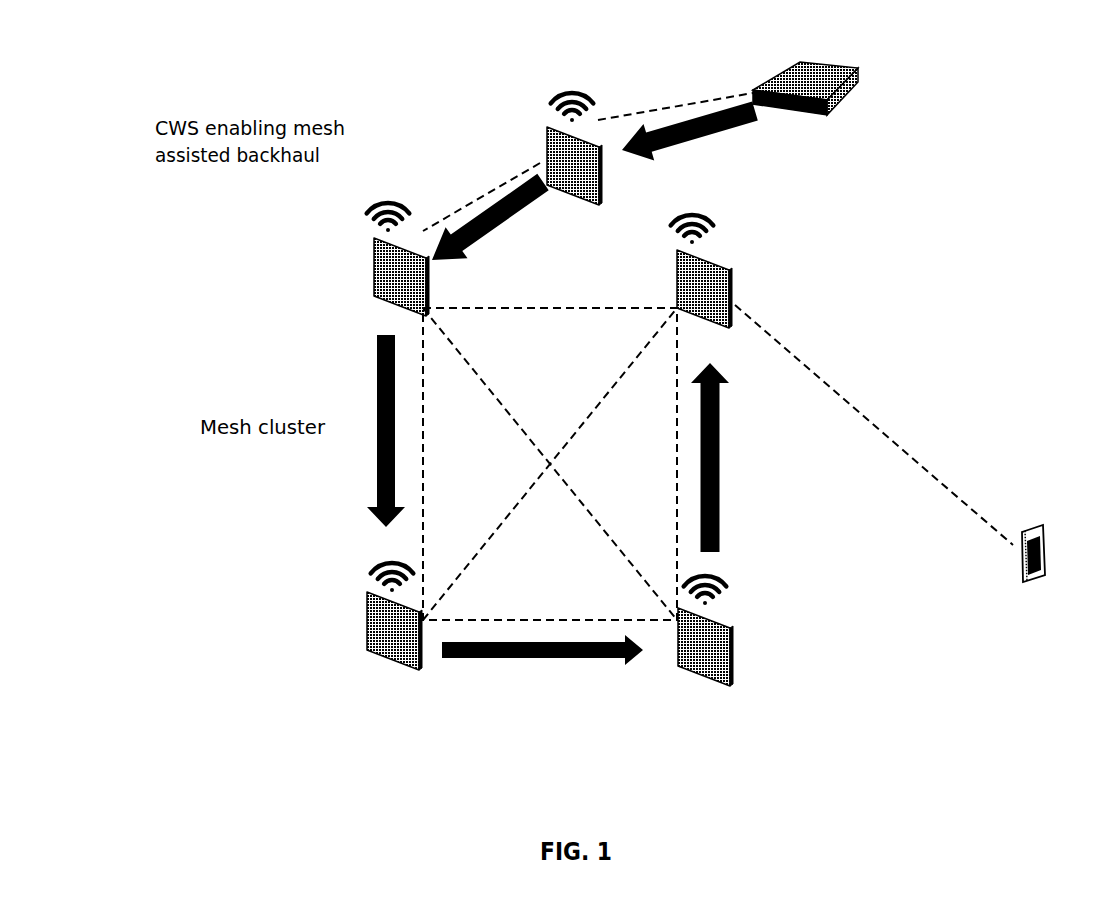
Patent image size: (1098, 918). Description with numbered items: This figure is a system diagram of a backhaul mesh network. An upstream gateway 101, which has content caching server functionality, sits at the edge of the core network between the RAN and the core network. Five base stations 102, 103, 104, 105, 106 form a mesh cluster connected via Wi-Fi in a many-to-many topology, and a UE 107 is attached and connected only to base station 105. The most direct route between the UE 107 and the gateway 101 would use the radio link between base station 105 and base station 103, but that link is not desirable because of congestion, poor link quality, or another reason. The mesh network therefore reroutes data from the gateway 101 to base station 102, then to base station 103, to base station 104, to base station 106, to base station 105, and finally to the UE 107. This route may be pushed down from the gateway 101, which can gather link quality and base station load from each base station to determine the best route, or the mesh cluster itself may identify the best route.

The upstream gateway 101 is at (829, 62).
The base station 102 is at (543, 140).
The base station 103 is at (372, 265).
The base station 104 is at (365, 627).
The base station 105 is at (737, 285).
The base station 106 is at (737, 648).
The UE 107 is at (1032, 523).